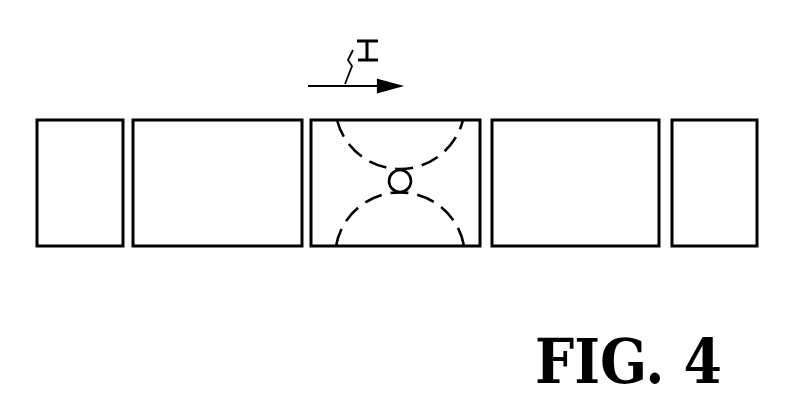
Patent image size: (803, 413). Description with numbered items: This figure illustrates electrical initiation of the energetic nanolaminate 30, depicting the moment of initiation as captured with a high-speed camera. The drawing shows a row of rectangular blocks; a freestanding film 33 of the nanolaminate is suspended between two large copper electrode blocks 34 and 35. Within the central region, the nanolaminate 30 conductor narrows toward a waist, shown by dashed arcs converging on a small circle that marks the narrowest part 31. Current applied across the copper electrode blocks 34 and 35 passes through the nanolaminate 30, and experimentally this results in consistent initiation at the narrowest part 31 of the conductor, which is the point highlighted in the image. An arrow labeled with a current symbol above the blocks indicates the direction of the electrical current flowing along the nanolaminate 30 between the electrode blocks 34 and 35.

The energetic nanolaminate 30 is at (329, 220).
The narrowest part 31 is at (405, 168).
The freestanding film 33 is at (735, 195).
The copper electrode block 34 is at (598, 196).
The copper electrode block 35 is at (232, 208).